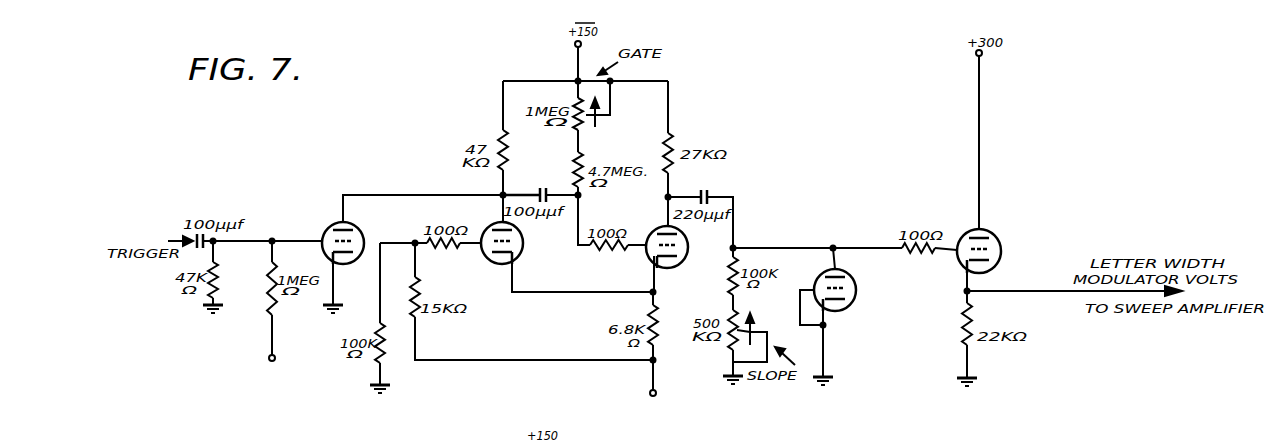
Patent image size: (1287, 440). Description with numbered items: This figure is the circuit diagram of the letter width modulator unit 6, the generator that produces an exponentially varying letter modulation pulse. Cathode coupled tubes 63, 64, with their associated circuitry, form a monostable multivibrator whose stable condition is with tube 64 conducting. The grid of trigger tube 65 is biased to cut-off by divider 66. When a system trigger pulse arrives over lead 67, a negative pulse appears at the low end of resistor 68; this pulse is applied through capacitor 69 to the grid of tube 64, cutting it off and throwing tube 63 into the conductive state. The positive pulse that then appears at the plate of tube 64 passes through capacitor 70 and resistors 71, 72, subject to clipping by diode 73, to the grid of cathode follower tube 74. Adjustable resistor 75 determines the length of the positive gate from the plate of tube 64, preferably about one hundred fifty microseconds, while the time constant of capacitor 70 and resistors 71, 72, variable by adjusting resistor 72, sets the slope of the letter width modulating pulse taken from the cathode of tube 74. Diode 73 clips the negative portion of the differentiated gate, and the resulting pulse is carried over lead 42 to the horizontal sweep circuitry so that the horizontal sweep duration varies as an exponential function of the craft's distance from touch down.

The letter width modulator unit 6 is at (427, 168).
The lead 42 is at (1060, 294).
The tube 63 is at (498, 266).
The tube 64 is at (684, 259).
The trigger tube 65 is at (351, 224).
The divider 66 is at (267, 279).
The lead 67 is at (170, 240).
The resistor 68 is at (510, 148).
The capacitor 69 is at (540, 188).
The capacitor 70 is at (707, 191).
The resistor 71 is at (729, 288).
The resistor 72 is at (728, 350).
The diode 73 is at (575, 100).
The cathode follower tube 74 is at (998, 238).
The adjustable resistor 75 is at (857, 278).